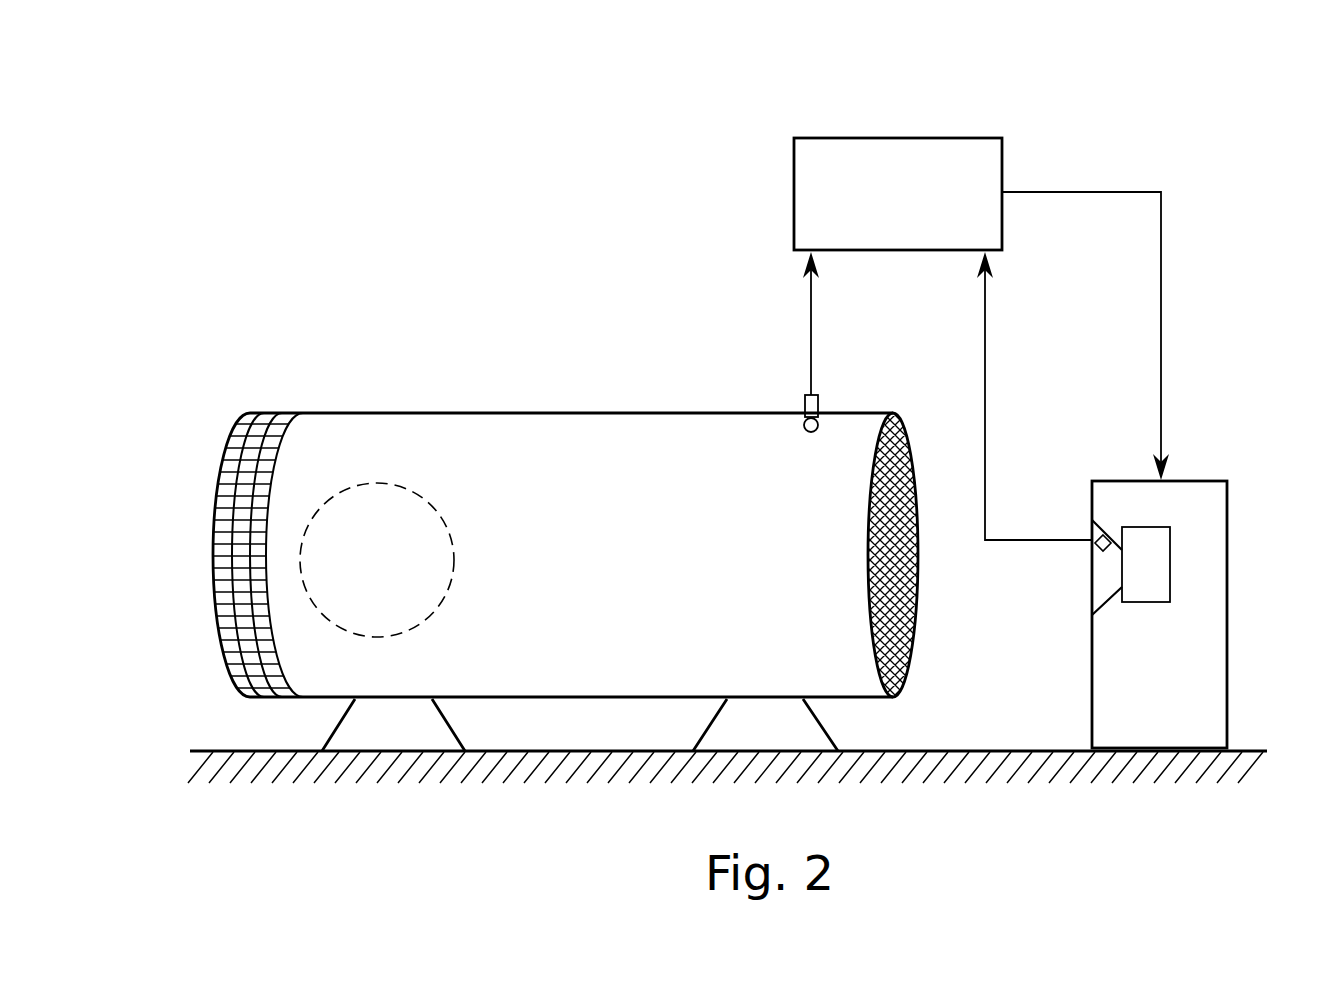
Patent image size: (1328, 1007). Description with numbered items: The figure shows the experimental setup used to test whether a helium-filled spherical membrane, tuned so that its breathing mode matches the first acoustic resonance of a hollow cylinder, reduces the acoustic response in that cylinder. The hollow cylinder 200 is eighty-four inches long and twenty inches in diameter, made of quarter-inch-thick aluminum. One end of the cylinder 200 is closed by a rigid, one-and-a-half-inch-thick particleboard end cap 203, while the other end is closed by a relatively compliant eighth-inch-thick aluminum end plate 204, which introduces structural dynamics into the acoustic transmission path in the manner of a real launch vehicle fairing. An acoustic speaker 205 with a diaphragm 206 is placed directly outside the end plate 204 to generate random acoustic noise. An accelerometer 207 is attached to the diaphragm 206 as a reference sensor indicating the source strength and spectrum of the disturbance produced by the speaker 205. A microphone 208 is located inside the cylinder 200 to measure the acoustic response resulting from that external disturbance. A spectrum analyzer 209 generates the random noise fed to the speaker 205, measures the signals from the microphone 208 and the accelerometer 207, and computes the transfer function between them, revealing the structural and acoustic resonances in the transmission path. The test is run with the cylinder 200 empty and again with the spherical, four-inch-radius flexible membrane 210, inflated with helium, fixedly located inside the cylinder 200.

The hollow cylinder 200 is at (540, 413).
The end cap 203 is at (216, 480).
The end plate 204 is at (917, 640).
The acoustic speaker 205 is at (1228, 535).
The diaphragm 206 is at (1092, 600).
The accelerometer 207 is at (1092, 550).
The microphone 208 is at (803, 427).
The spectrum analyzer 209 is at (857, 138).
The flexible membrane 210 is at (397, 483).